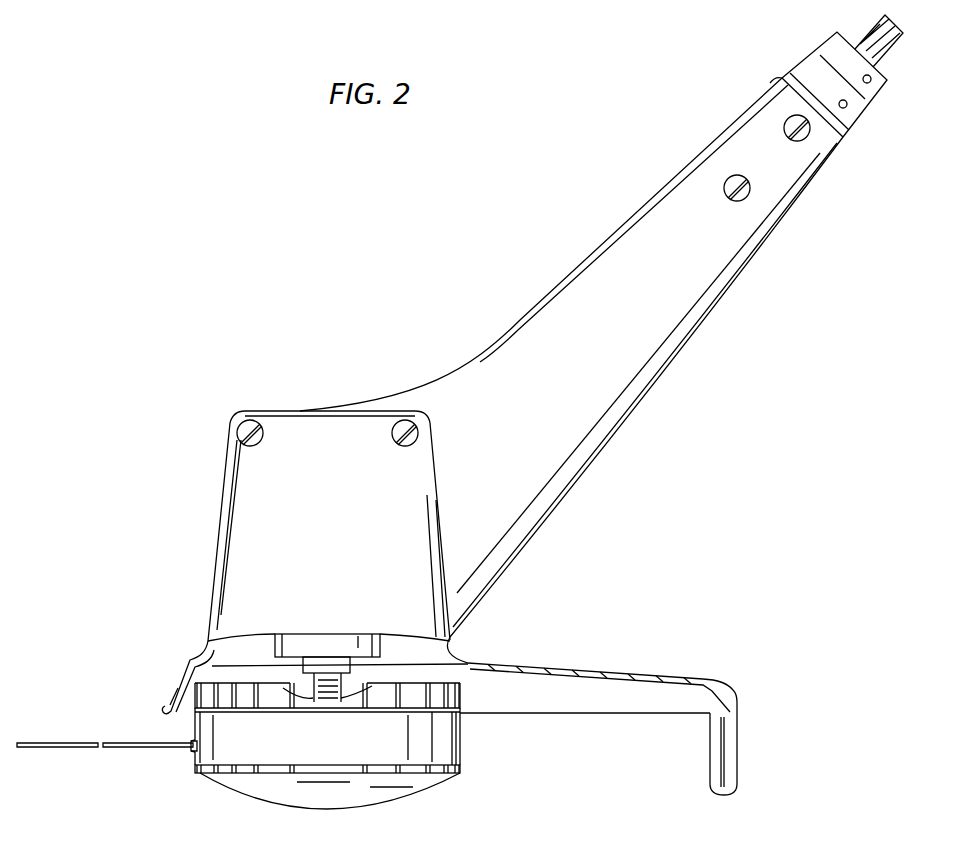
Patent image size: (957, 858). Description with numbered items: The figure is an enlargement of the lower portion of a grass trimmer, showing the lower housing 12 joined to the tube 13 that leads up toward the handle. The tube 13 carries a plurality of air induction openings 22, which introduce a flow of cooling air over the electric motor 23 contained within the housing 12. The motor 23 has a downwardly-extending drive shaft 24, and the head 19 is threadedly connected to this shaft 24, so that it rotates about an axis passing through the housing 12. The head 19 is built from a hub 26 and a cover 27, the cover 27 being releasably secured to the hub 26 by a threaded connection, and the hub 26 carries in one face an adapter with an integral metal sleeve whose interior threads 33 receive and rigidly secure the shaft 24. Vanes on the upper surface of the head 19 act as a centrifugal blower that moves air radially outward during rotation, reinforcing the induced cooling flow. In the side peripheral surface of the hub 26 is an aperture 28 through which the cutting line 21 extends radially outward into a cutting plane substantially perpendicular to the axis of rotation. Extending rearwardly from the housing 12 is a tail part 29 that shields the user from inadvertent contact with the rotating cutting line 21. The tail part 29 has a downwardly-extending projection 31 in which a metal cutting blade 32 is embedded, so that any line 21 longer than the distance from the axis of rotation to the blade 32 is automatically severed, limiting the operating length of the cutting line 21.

The lower housing 12 is at (660, 183).
The tube 13 is at (822, 43).
The air induction openings 22 is at (855, 110).
The head 19 is at (462, 772).
The cutting line 21 is at (62, 742).
The electric motor 23 is at (298, 638).
The drive shaft 24 is at (327, 680).
The hub 26 is at (463, 741).
The cover 27 is at (455, 697).
The aperture 28 is at (192, 750).
The tail part 29 is at (618, 668).
The projection 31 is at (727, 797).
The cutting blade 32 is at (727, 748).
The interior threads 33 is at (310, 693).